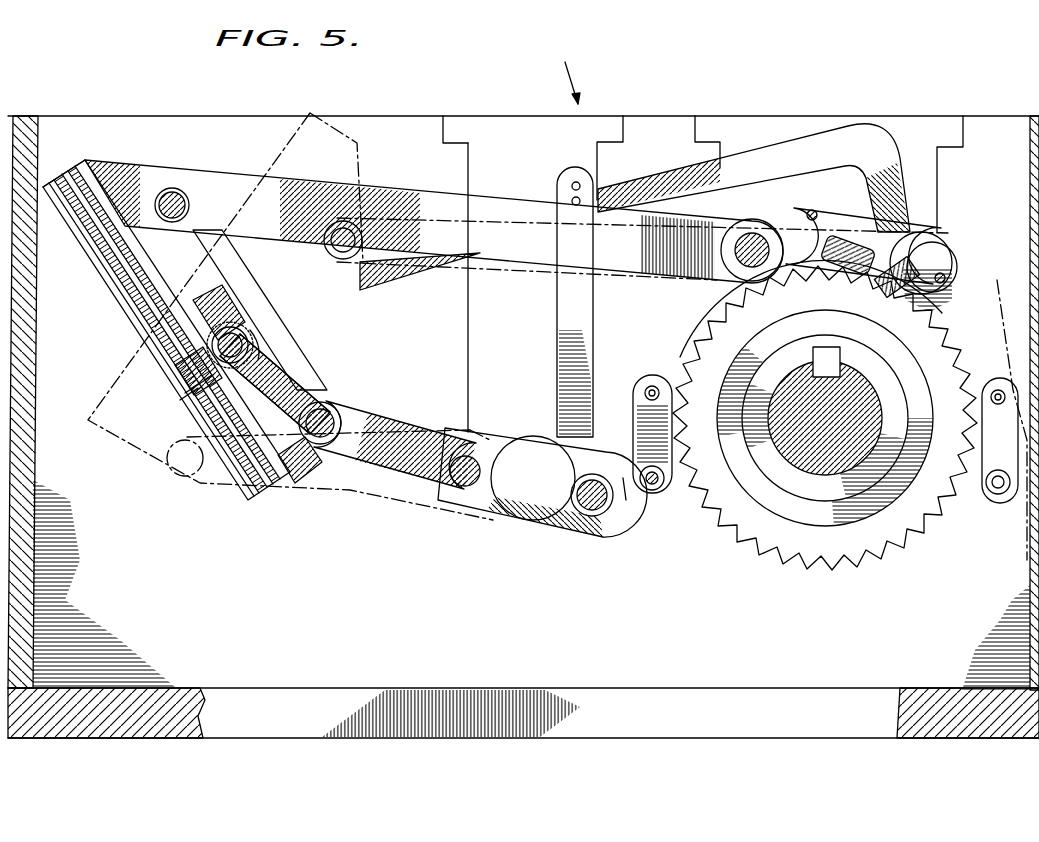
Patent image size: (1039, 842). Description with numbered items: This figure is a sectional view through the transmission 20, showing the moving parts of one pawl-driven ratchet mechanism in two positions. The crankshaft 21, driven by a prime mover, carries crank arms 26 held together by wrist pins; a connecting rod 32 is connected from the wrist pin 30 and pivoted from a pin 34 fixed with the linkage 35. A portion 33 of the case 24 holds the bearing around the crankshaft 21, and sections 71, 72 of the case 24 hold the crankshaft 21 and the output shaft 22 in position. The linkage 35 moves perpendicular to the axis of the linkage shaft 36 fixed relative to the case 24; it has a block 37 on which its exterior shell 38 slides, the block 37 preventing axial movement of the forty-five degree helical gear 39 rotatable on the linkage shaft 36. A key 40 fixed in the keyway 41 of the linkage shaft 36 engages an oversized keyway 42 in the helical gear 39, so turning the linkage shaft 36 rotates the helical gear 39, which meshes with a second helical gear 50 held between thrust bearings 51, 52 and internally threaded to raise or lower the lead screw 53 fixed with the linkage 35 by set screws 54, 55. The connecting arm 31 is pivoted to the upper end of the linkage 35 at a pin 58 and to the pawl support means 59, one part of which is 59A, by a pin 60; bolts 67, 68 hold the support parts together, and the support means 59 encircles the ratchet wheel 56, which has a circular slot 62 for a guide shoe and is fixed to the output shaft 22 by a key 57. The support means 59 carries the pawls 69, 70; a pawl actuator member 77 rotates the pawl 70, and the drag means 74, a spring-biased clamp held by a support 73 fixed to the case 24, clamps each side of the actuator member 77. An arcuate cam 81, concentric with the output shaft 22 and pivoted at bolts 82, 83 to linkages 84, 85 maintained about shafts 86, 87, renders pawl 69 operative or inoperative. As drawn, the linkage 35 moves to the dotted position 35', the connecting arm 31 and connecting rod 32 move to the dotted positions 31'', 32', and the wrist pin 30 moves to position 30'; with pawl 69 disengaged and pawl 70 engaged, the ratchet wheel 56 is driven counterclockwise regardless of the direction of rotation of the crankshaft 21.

The feed mechanism 20 is at (557, 71).
The crankshaft 21 is at (533, 540).
The output shaft 22 is at (867, 453).
The case 24 is at (653, 120).
The crank arms 26 is at (627, 500).
The wrist pin 30 is at (592, 527).
The wrist pin (dotted position) 30' is at (456, 508).
The connecting arm 31 is at (434, 220).
The connecting arm (dotted position) 31'' is at (642, 190).
The connecting rod 32 is at (395, 435).
The connecting rod (dotted position) 32' is at (422, 485).
The portion of case 33 is at (461, 128).
The pin 34 is at (338, 408).
The linkage 35 is at (455, 311).
The linkage (dotted position) 35' is at (290, 316).
The linkage shaft 36 is at (257, 340).
The block 37 is at (263, 383).
The exterior shell 38 is at (240, 256).
The helical gear 39 is at (260, 347).
The key 40 is at (213, 317).
The keyway 41 is at (237, 340).
The keyway 42 is at (220, 337).
The second helical gear 50 is at (187, 385).
The thrust bearing 51 is at (177, 407).
The thrust bearing 52 is at (175, 363).
The lead screw 53 is at (122, 268).
The set screw 54 is at (257, 497).
The set screw 55 is at (46, 186).
The ratchet wheel 56 is at (737, 533).
The key 57 is at (848, 320).
The pin 58 is at (172, 200).
The pawl support means 59 is at (835, 220).
The pawl support means part 59A is at (942, 278).
The pin 60 is at (750, 232).
The circular slot 62 is at (817, 517).
The bolt 67 is at (813, 211).
The bolt 68 is at (927, 240).
The pawl 69 is at (870, 270).
The pawl 70 is at (878, 253).
The section of case 71 is at (470, 308).
The section of case 72 is at (937, 120).
The support 73 is at (557, 367).
The drag means 74 is at (610, 190).
The pawl actuator member 77 is at (788, 146).
The cam 81 is at (710, 307).
The bolt 82 is at (652, 388).
The bolt 83 is at (998, 392).
The linkage 84 is at (640, 406).
The linkage 85 is at (998, 452).
The shaft 86 is at (655, 483).
The shaft 87 is at (1000, 492).